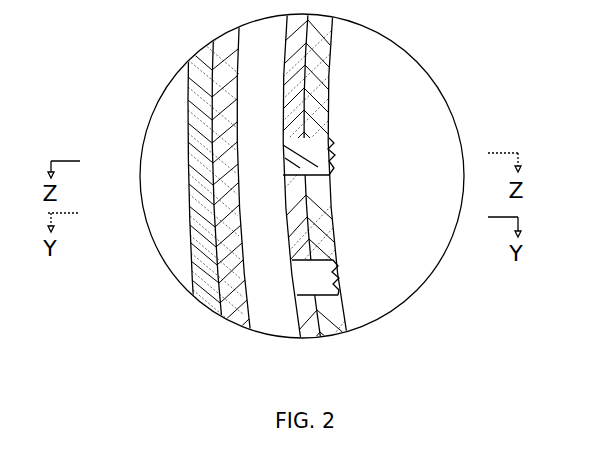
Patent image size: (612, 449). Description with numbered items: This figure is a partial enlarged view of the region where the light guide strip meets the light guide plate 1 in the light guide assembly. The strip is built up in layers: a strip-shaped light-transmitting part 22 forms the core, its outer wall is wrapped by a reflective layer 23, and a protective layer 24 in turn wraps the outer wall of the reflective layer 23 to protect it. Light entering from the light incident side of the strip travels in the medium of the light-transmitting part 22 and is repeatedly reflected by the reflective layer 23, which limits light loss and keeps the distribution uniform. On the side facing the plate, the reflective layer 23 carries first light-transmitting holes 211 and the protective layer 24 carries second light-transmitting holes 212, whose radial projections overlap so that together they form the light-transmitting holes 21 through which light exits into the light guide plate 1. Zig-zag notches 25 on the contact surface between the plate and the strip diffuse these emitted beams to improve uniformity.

The light guide plate 1 is at (257, 200).
The light-transmitting holes 21 is at (201, 200).
The first light-transmitting holes 211 is at (290, 160).
The second light-transmitting holes 212 is at (325, 142).
The light-transmitting part 22 is at (247, 228).
The reflective layer 23 is at (222, 243).
The protective layer 24 is at (213, 259).
The zig-zag notches 25 is at (217, 106).